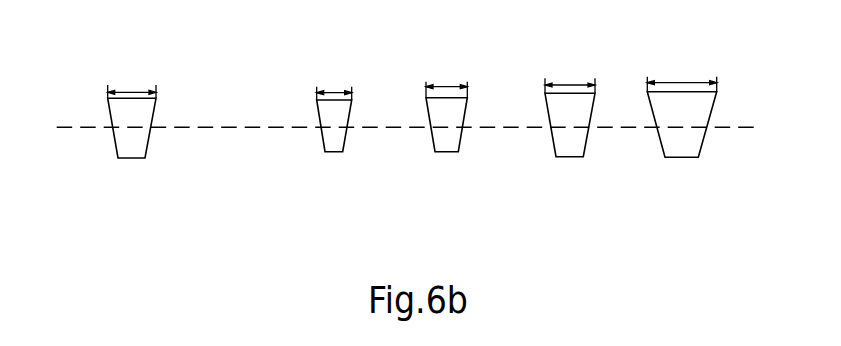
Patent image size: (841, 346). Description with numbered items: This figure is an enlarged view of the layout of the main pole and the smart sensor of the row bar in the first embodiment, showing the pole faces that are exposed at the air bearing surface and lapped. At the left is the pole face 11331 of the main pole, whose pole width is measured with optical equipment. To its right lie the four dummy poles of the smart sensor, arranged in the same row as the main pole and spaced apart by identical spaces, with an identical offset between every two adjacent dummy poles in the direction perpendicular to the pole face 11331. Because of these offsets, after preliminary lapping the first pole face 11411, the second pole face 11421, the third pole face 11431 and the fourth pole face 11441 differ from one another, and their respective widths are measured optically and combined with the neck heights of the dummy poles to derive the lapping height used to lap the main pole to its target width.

The pole face 11331 is at (129, 140).
The first pole face 11411 is at (335, 143).
The second pole face 11421 is at (447, 140).
The third pole face 11431 is at (570, 140).
The fourth pole face 11441 is at (677, 140).